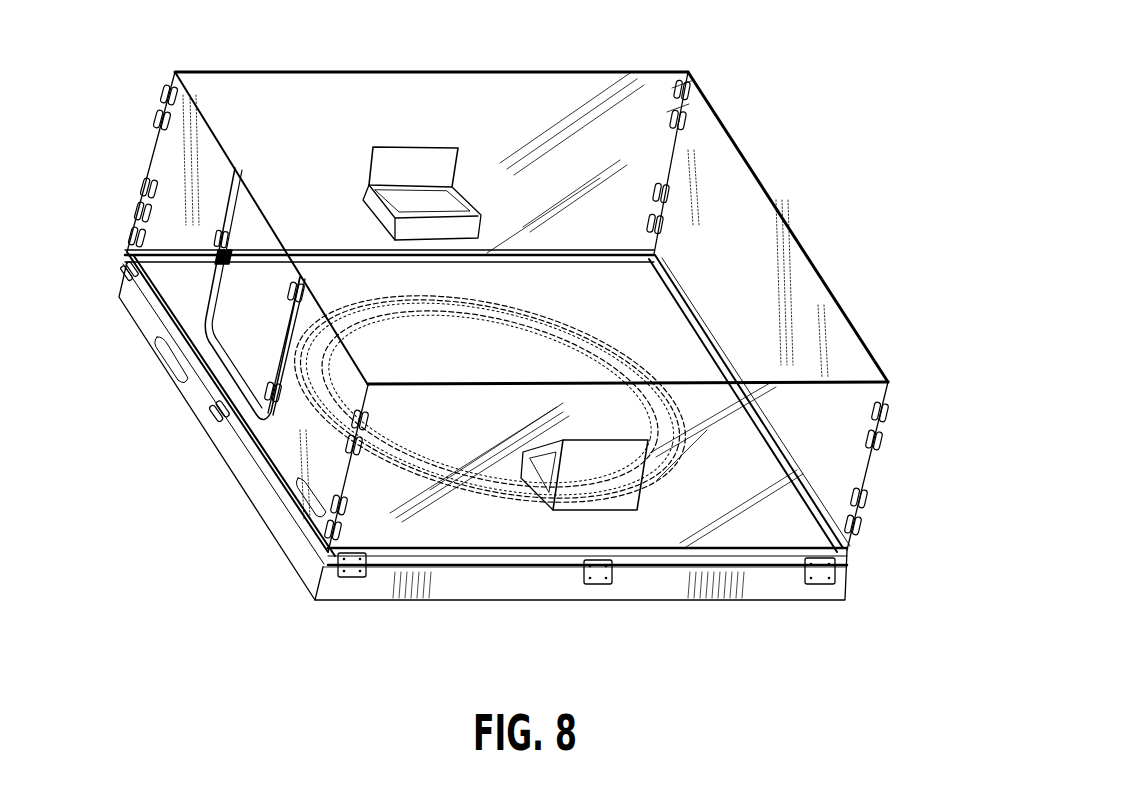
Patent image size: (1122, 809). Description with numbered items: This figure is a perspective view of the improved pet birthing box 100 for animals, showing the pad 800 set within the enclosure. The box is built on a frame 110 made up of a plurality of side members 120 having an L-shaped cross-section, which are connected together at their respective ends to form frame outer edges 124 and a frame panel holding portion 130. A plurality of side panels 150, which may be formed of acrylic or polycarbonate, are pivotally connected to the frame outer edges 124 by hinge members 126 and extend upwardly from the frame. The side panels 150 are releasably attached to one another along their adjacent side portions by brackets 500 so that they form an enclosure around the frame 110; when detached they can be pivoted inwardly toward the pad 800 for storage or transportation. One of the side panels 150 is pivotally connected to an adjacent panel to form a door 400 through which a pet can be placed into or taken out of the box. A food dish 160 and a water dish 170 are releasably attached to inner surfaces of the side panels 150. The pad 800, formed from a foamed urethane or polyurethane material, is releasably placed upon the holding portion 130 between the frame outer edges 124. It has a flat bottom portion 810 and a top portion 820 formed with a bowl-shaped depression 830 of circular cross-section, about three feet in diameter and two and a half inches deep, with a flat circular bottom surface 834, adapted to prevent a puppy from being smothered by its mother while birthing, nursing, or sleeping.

The improved pet birthing box 100 is at (856, 211).
The frame 110 is at (343, 262).
The side members 120 is at (200, 414).
The frame outer edges 124 is at (613, 250).
The hinge members 126 is at (213, 445).
The frame panel holding portion 130 is at (413, 530).
The side panels 150 is at (247, 92).
The food dish 160 is at (412, 170).
The water dish 170 is at (573, 442).
The door 400 is at (203, 320).
The brackets 500 is at (697, 117).
The pad 800 is at (640, 322).
The flat bottom portion 810 is at (280, 545).
The top portion 820 is at (556, 295).
The depression 830 is at (520, 308).
The flat circular bottom surface 834 is at (572, 370).